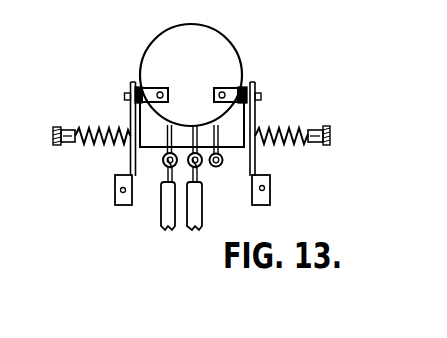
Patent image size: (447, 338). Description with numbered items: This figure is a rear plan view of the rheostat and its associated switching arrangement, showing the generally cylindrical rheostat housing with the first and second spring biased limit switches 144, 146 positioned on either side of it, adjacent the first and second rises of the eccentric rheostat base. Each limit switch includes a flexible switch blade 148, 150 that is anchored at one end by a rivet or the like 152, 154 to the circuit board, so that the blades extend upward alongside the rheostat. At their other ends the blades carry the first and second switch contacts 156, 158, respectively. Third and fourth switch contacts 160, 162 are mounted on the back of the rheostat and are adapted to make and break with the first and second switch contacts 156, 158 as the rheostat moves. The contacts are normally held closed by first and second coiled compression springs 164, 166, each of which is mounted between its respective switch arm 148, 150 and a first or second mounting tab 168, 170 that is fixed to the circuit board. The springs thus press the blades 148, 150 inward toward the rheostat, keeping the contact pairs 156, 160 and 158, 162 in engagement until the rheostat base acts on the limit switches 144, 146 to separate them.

The first spring biased limit switch 144 is at (259, 90).
The second spring biased limit switch 146 is at (126, 94).
The flexible switch blade 148 is at (256, 166).
The flexible switch blade 150 is at (130, 158).
The rivet 152 is at (266, 189).
The rivet 154 is at (119, 191).
The first switch contact 156 is at (249, 87).
The second switch contact 158 is at (138, 87).
The third switch contact 160 is at (240, 88).
The fourth switch contact 162 is at (143, 88).
The first coiled compression spring 164 is at (87, 128).
The second coiled compression spring 166 is at (289, 129).
The first mounting tab 168 is at (55, 135).
The second mounting tab 170 is at (330, 136).